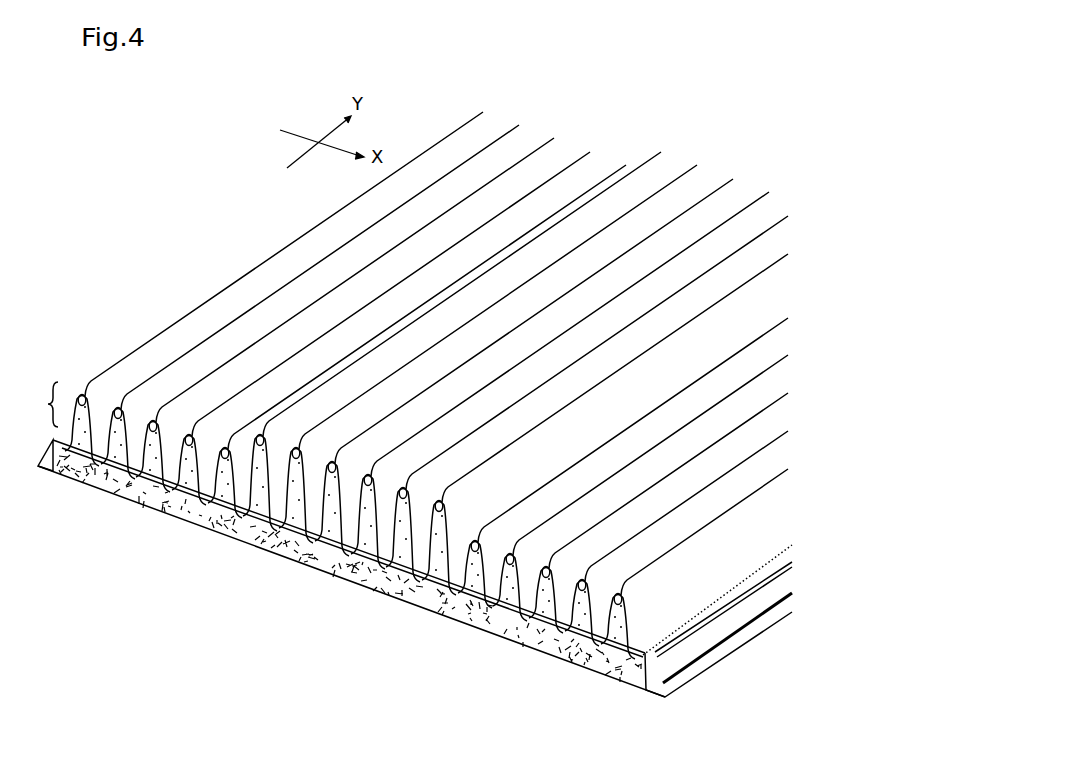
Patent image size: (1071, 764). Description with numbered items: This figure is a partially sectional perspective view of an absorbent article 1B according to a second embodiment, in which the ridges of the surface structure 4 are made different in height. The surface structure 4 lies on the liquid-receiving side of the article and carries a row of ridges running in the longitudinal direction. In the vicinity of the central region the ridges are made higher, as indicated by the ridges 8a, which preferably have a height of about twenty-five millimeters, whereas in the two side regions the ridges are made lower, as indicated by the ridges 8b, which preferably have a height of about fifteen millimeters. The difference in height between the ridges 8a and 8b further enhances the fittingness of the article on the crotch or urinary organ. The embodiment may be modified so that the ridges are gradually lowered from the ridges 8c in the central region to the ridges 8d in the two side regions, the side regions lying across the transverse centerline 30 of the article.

The absorbent article 1B is at (212, 228).
The surface structure 4 is at (44, 404).
The higher ridges 8a is at (580, 415).
The lower ridges 8b is at (154, 312).
The central region ridges 8c is at (328, 514).
The side region ridges 8d is at (80, 433).
The centerline 30 is at (335, 562).